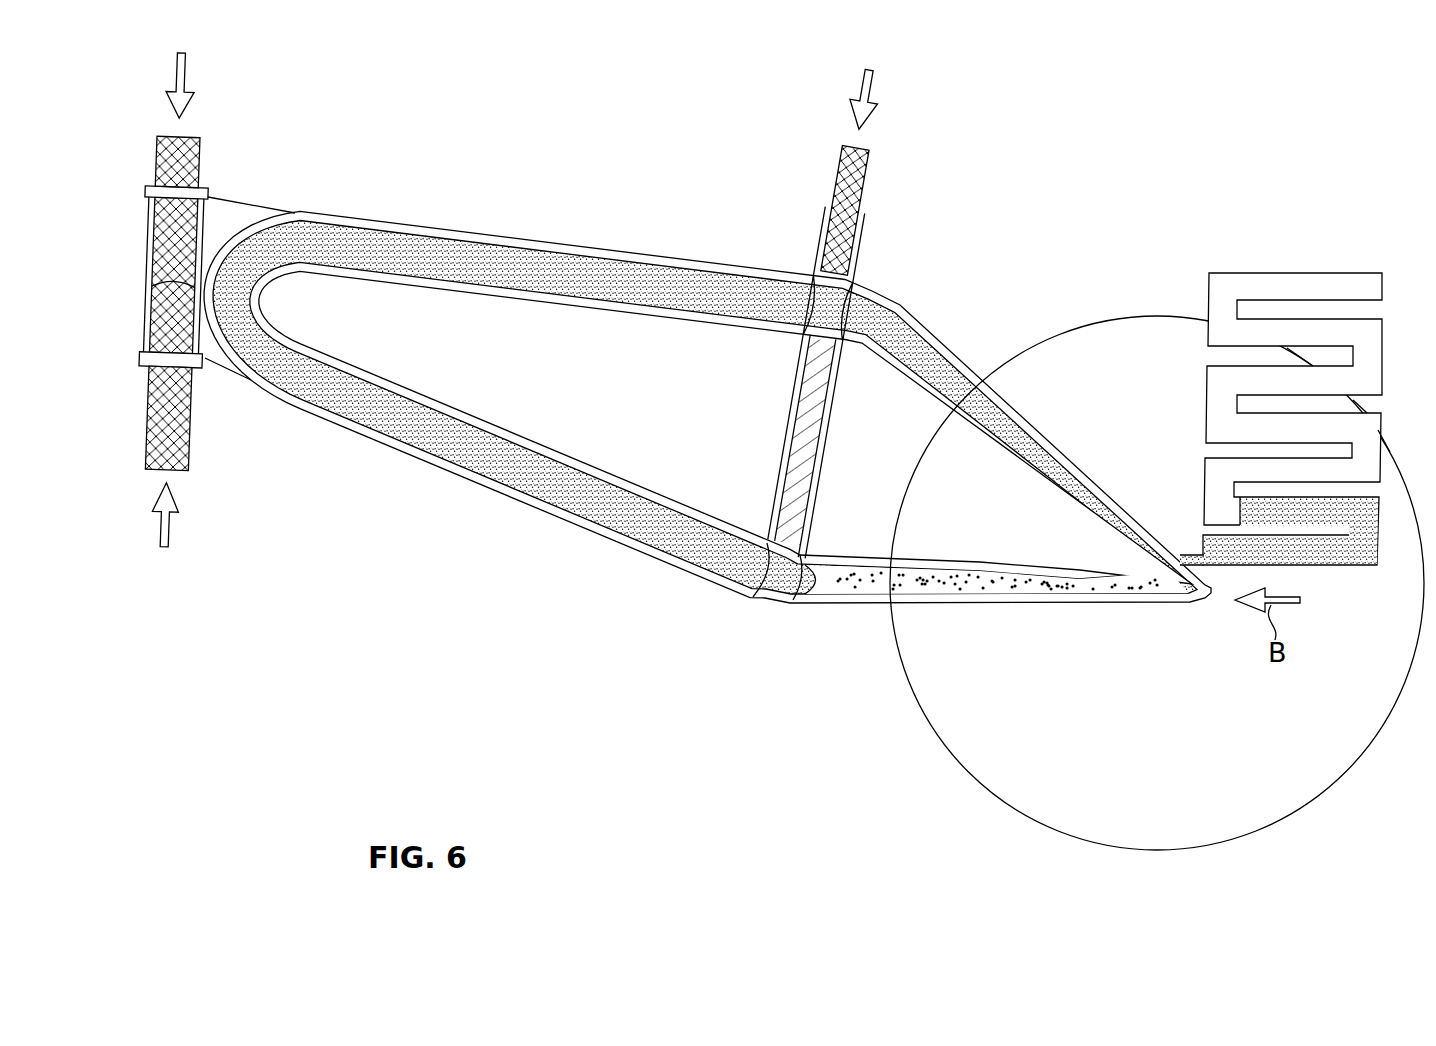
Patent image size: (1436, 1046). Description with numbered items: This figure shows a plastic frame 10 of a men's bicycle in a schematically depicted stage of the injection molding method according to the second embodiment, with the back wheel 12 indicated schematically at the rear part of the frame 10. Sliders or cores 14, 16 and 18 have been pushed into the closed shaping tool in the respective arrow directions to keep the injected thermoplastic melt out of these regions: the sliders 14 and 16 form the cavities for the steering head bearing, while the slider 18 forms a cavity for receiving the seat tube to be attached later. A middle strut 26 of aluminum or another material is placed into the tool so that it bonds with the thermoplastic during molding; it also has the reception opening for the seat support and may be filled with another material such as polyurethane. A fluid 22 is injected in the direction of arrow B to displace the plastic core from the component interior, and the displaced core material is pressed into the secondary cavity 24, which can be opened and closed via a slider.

The bicycle frame 10 is at (492, 497).
The back wheel 12 is at (1088, 324).
The slider 14 is at (200, 158).
The slider 16 is at (190, 450).
The slider 18 is at (860, 193).
The fluid 22 is at (966, 585).
The secondary cavity 24 is at (1290, 283).
The middle strut 26 is at (803, 412).